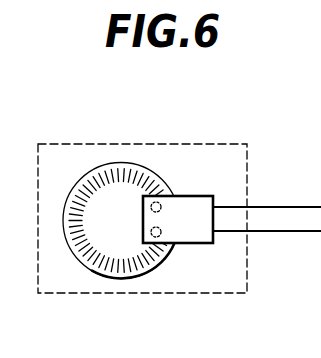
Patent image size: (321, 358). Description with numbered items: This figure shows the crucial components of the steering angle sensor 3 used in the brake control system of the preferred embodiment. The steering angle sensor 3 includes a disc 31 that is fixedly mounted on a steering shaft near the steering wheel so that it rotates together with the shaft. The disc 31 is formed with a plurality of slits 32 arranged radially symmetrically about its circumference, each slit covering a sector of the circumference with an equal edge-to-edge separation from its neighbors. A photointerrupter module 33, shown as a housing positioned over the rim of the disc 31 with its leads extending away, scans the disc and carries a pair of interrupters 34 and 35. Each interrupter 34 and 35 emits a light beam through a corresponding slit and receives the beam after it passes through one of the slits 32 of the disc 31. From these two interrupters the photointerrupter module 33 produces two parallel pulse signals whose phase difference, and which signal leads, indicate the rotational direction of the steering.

The steering angle sensor 3 is at (142, 143).
The disc 31 is at (102, 241).
The slits 32 is at (83, 188).
The photointerrupter module 33 is at (215, 199).
The interrupter 34 is at (154, 200).
The interrupter 35 is at (165, 249).